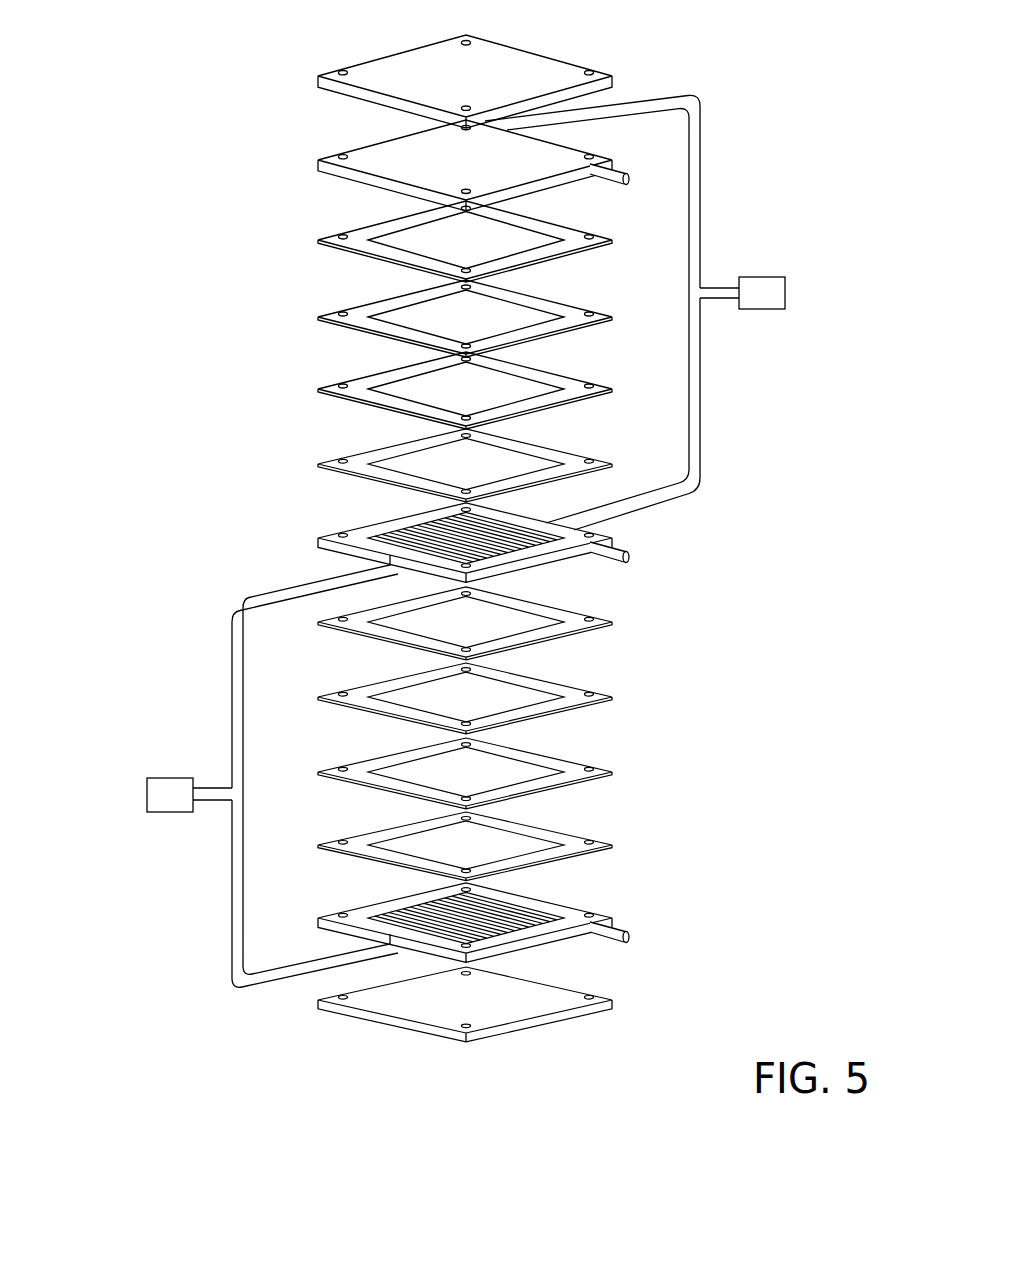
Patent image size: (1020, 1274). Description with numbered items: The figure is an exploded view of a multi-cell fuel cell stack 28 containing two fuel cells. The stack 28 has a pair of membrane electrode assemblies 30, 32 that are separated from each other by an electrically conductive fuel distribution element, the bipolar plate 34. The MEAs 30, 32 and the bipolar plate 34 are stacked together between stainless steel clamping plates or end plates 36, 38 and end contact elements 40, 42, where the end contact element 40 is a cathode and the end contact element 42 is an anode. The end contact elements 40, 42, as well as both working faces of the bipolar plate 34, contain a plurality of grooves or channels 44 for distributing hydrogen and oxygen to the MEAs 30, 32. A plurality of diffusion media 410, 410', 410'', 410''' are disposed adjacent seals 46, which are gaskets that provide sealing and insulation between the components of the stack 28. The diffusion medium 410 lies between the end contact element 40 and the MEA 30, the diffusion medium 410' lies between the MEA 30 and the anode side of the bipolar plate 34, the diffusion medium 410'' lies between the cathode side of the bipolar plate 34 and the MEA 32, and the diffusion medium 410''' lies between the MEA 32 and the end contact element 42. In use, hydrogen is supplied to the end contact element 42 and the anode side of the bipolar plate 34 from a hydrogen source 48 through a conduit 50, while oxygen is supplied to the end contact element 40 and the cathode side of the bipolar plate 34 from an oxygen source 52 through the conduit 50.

The fuel cell stack 28 is at (735, 30).
The end plate 36 is at (320, 74).
The end contact element 40 is at (318, 166).
The seal 46 is at (352, 244).
The diffusion medium 410 is at (501, 308).
The membrane electrode assembly 30 is at (350, 388).
The diffusion medium 410' is at (505, 452).
The bipolar plate 34 is at (318, 550).
The channels 44 is at (507, 537).
The conduit 50 is at (700, 391).
The oxygen source 52 is at (786, 278).
The hydrogen source 48 is at (147, 782).
The diffusion medium 410'' is at (430, 694).
The membrane electrode assembly 32 is at (585, 774).
The diffusion medium 410''' is at (430, 843).
The end contact element 42 is at (585, 914).
The end plate 38 is at (590, 993).